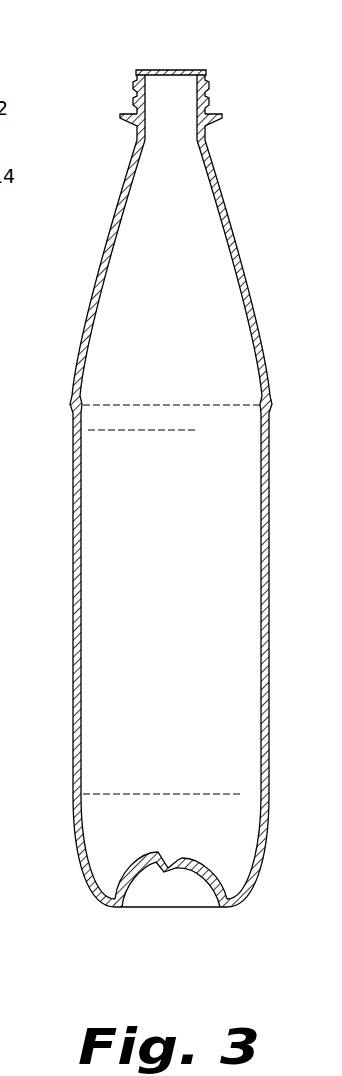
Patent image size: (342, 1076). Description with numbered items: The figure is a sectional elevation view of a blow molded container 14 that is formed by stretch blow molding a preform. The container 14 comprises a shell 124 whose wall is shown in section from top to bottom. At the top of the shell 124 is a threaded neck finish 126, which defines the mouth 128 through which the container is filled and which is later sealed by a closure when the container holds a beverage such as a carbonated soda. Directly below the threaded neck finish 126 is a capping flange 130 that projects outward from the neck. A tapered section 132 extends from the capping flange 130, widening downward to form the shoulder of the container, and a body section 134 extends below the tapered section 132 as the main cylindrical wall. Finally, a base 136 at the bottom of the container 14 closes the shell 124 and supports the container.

The container 14 is at (275, 282).
The shell 124 is at (273, 495).
The threaded neck finish 126 is at (206, 87).
The mouth 128 is at (142, 68).
The capping flange 130 is at (220, 117).
The tapered section 132 is at (103, 242).
The body section 134 is at (72, 523).
The base 136 is at (157, 882).